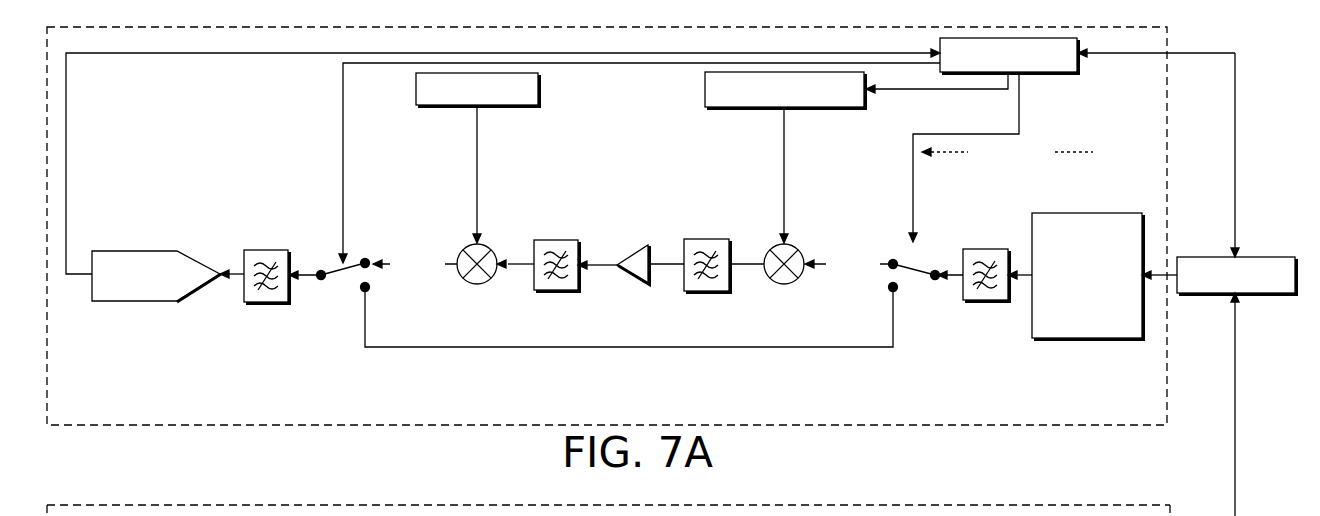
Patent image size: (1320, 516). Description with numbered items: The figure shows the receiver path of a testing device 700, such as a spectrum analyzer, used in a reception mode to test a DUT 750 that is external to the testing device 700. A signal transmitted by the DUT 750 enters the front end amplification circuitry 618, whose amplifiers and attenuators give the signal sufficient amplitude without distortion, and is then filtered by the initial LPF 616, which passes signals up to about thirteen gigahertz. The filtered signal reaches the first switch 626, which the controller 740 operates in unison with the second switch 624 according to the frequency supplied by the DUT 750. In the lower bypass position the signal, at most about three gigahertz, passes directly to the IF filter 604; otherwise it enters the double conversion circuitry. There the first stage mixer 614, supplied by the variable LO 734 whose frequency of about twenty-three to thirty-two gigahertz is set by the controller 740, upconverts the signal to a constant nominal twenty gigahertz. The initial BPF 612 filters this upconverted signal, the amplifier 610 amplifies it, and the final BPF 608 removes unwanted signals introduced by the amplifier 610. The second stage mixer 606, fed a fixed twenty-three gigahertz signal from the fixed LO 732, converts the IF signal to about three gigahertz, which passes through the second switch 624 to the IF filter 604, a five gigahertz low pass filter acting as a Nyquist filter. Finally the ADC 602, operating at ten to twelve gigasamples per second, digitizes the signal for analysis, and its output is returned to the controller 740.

The testing device 700 is at (102, 411).
The ADC 602 is at (135, 303).
The IF filter 604 is at (270, 372).
The second stage mixer 606 is at (478, 284).
The final BPF 608 is at (556, 291).
The amplifier 610 is at (633, 245).
The initial BPF 612 is at (706, 292).
The first stage mixer 614 is at (785, 284).
The initial LPF 616 is at (990, 365).
The front end amplification circuitry 618 is at (1087, 339).
The second switch SWr2 624 is at (335, 325).
The first switch SWr1 626 is at (918, 325).
The fixed LO 732 is at (416, 86).
The variable LO 734 is at (705, 87).
The controller 740 is at (1063, 72).
The DUT 750 is at (1253, 258).